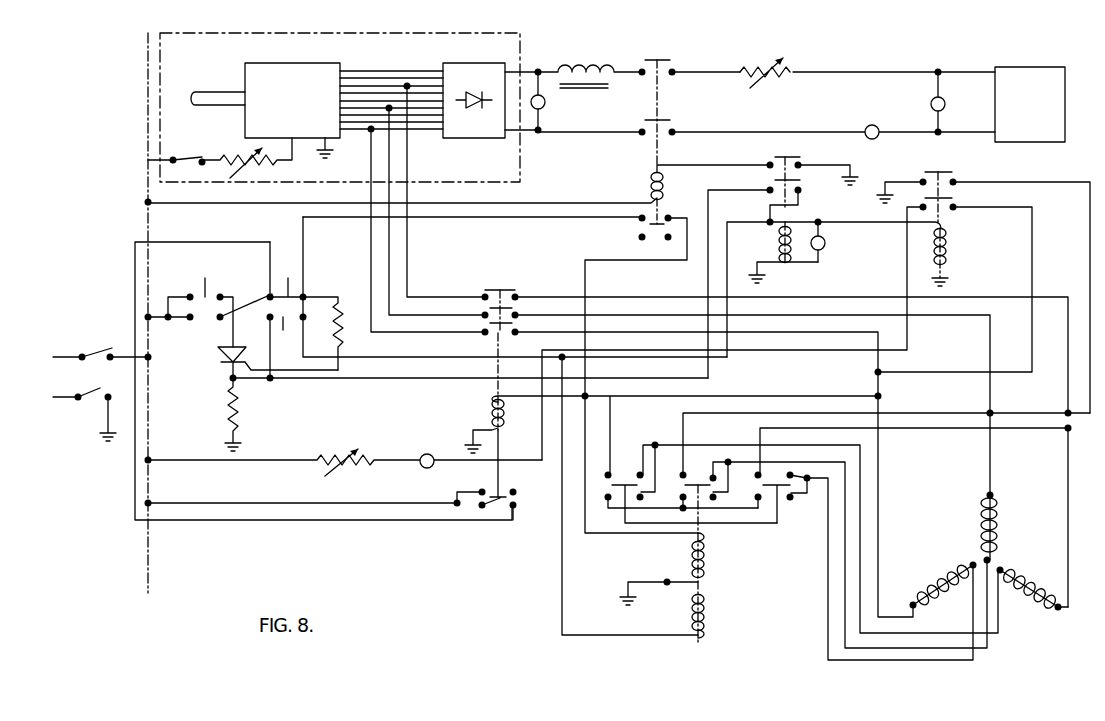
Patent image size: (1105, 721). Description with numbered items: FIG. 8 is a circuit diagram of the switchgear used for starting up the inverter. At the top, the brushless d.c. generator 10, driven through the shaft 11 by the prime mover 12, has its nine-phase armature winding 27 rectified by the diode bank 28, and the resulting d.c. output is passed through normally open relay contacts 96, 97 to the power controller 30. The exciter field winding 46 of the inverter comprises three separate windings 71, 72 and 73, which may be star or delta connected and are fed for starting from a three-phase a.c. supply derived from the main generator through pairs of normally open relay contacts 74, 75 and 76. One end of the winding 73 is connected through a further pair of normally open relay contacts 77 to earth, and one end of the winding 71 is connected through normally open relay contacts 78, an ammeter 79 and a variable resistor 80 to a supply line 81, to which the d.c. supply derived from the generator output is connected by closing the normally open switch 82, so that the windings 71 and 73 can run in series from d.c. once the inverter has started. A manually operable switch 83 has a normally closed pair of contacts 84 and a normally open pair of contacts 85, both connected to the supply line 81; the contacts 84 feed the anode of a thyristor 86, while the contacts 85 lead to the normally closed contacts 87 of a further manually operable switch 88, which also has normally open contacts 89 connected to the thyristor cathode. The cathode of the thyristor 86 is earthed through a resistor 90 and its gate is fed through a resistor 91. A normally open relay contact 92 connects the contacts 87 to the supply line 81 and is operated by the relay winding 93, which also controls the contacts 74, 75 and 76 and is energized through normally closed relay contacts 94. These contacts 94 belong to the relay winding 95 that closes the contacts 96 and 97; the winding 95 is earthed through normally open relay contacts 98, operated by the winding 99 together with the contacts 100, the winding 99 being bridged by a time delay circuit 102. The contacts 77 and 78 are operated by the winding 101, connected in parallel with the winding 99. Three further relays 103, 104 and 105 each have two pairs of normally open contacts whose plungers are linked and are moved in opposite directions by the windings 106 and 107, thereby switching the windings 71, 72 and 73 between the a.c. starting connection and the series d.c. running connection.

The brushless d.c. generator 10 is at (520, 160).
The shaft 11 is at (218, 91).
The prime mover 12 is at (370, 70).
The armature winding 27 is at (270, 70).
The bank of diodes 28 is at (485, 63).
The power controller 30 is at (1028, 73).
The exciter field winding 46 is at (973, 550).
The winding 71 is at (933, 582).
The winding 72 is at (1000, 515).
The winding 73 is at (1028, 598).
The pair of normally open relay contacts 74 is at (488, 333).
The pair of normally open relay contacts 75 is at (485, 310).
The pair of normally open relay contacts 76 is at (510, 293).
The pair of normally open relay contacts 77 is at (957, 177).
The pair of normally open relay contacts 78 is at (958, 203).
The ammeter 79 is at (422, 452).
The variable resistor 80 is at (317, 477).
The supply line 81 is at (152, 562).
The normally open switch 82 is at (90, 347).
The manually operable switch 83 is at (183, 306).
The normally closed pair of contacts 84 is at (203, 293).
The normally open pair of contacts 85 is at (203, 317).
The thyristor 86 is at (230, 360).
The pair of normally closed contacts 87 is at (280, 296).
The manually operable switch 88 is at (283, 266).
The pair of normally open contacts 89 is at (282, 349).
The resistor 90 is at (243, 400).
The resistor 91 is at (340, 305).
The normally open relay contact 92 is at (497, 515).
The relay winding 93 is at (490, 414).
The pair of normally closed relay contacts 94 is at (637, 230).
The relay winding 95 is at (648, 174).
The pair of normally open relay contacts 96 is at (665, 114).
The pair of normally open relay contacts 97 is at (663, 57).
The pair of normally open relay contacts 98 is at (767, 156).
The relay winding 99 is at (780, 242).
The pair of normally open contacts 100 is at (801, 184).
The relay winding 101 is at (952, 243).
The time delay circuit 102 is at (827, 243).
The relay 103 is at (623, 473).
The relay 104 is at (698, 473).
The relay 105 is at (782, 498).
The winding 106 is at (710, 560).
The winding 107 is at (712, 612).